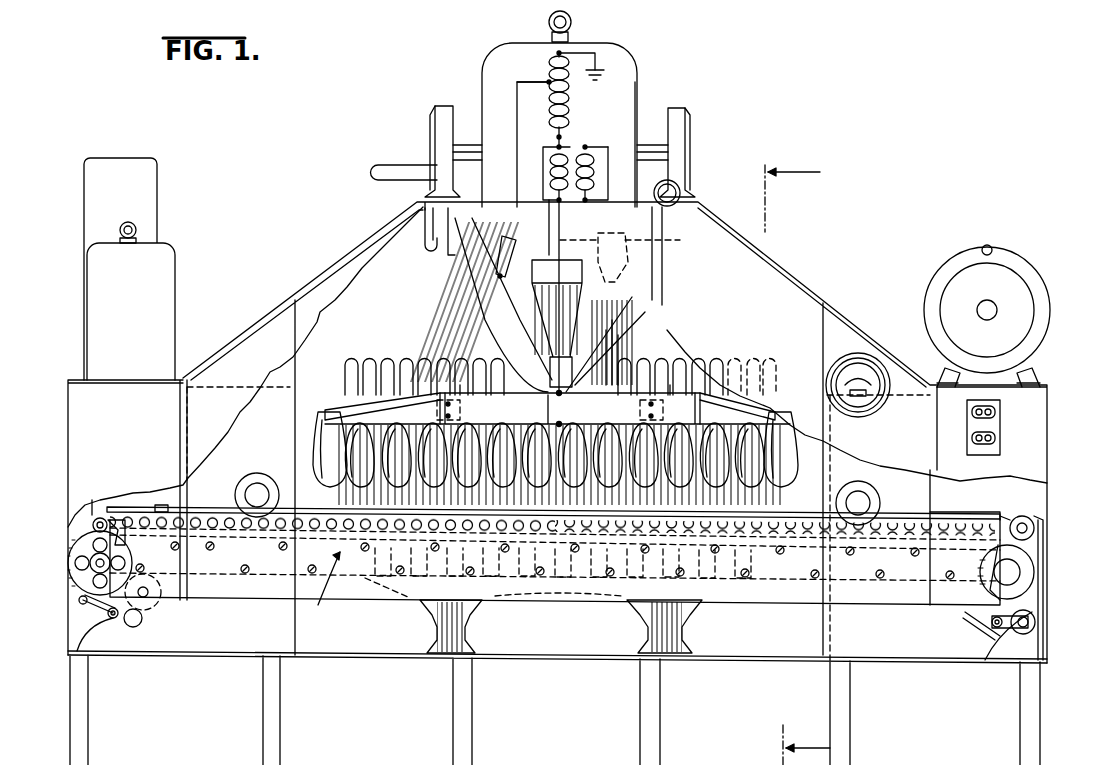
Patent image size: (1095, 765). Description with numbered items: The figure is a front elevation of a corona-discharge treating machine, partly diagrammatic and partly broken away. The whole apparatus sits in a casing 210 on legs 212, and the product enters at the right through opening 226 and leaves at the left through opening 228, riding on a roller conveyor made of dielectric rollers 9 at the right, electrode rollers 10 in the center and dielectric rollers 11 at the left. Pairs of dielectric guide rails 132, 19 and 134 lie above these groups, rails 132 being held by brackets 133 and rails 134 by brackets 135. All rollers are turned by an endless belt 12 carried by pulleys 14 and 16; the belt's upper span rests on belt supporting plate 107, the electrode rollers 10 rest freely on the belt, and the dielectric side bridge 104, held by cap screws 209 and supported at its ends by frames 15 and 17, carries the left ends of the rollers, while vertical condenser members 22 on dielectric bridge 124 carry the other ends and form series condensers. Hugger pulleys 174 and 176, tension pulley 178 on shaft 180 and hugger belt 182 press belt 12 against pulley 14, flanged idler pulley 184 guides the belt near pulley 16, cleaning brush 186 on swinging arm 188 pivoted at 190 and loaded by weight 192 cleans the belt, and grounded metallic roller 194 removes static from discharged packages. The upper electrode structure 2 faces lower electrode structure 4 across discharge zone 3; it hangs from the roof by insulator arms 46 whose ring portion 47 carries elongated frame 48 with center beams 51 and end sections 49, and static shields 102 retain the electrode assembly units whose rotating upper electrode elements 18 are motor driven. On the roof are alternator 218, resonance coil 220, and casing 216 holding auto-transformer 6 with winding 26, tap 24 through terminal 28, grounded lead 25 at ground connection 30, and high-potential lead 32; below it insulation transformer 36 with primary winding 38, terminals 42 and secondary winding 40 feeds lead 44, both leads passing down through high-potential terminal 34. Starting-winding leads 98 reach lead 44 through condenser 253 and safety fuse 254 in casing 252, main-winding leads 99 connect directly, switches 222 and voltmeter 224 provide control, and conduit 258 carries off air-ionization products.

The upper electrode structure 2 is at (316, 412).
The discharge zone 3 is at (784, 496).
The lower electrode structure 4 is at (569, 453).
The high-voltage auto-transformer 6 is at (528, 62).
The dielectric rollers 9 is at (917, 526).
The electrode rollers 10 is at (660, 530).
The dielectric rollers 11 is at (208, 511).
The endless belt 12 is at (230, 571).
The pulley 14 is at (1026, 585).
The frame 15 is at (1035, 648).
The pulley 16 is at (69, 580).
The frame 17 is at (70, 637).
The upper electrode elements 18 is at (329, 440).
The guide rails 19 is at (340, 507).
The vertical condenser members 22 is at (383, 358).
The tap 24 is at (548, 86).
The lead 25 is at (580, 52).
The winding 26 is at (567, 108).
The terminal 28 is at (504, 275).
The ground connection 30 is at (601, 69).
The lead 32 is at (546, 155).
The high-potential terminal 34 is at (571, 314).
The insulation transformer 36 is at (576, 152).
The primary winding 38 is at (595, 177).
The secondary winding 40 is at (549, 177).
The terminals 42 is at (630, 245).
The lead 44 is at (568, 405).
The arms 46 is at (476, 292).
The ring portion 47 is at (616, 388).
The elongated frame 48 is at (441, 378).
The end sections 49 is at (345, 403).
The center beams 51 is at (510, 424).
The leads 98 is at (557, 408).
The leads 99 is at (421, 408).
The static shields 102 is at (317, 455).
The side bridge 104 is at (835, 597).
The belt supporting plate 107 is at (258, 547).
The dielectric bridge structure 124 is at (694, 622).
The guide rails 132 is at (935, 513).
The brackets 133 is at (997, 514).
The guide rails 134 is at (160, 505).
The brackets 135 is at (97, 500).
The hugger pulley 174 is at (1035, 518).
The hugger pulley 176 is at (964, 614).
The tension pulley 178 is at (1036, 625).
The shaft 180 is at (997, 628).
The hugger belt 182 is at (982, 630).
The flanged idler pulley 184 is at (150, 601).
The cleaning brush 186 is at (83, 603).
The swinging arm 188 is at (84, 605).
The pivot 190 is at (112, 619).
The weight 192 is at (135, 627).
The metallic roller 194 is at (96, 520).
The cap screws 209 is at (207, 545).
The casing 210 is at (80, 398).
The legs 212 is at (88, 698).
The casing 216 is at (638, 82).
The high-frequency low-voltage alternator 218 is at (1010, 262).
The power-factor compensating resonance coil 220 is at (170, 257).
The switches 222 is at (1003, 425).
The voltmeter 224 is at (860, 352).
The opening 226 is at (1045, 500).
The opening 228 is at (70, 530).
The casing 252 is at (460, 384).
The condenser 253 is at (549, 411).
The safety fuse 254 is at (549, 400).
The conduit 258 is at (392, 167).